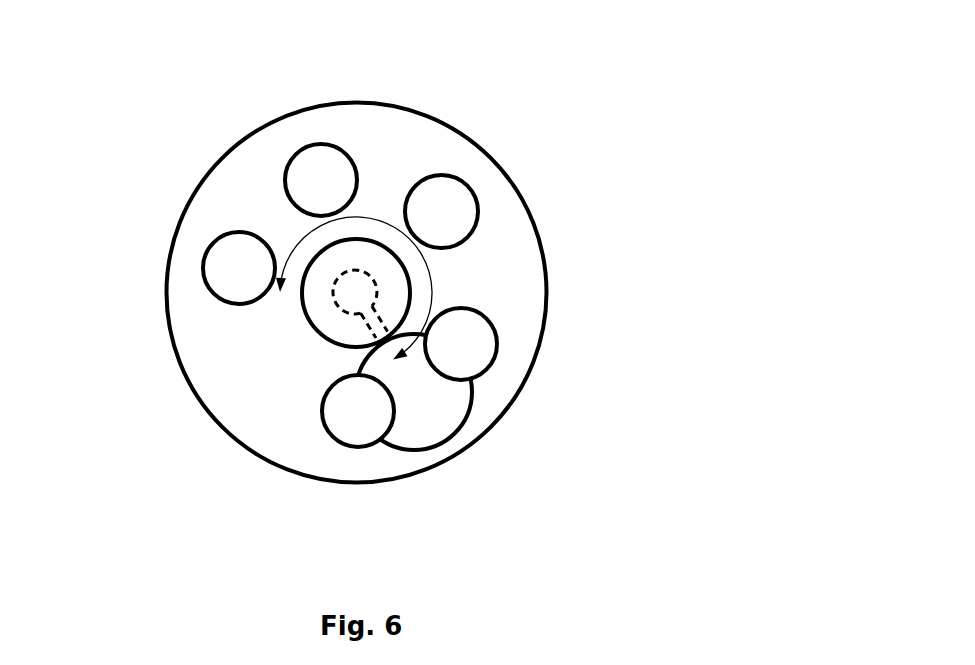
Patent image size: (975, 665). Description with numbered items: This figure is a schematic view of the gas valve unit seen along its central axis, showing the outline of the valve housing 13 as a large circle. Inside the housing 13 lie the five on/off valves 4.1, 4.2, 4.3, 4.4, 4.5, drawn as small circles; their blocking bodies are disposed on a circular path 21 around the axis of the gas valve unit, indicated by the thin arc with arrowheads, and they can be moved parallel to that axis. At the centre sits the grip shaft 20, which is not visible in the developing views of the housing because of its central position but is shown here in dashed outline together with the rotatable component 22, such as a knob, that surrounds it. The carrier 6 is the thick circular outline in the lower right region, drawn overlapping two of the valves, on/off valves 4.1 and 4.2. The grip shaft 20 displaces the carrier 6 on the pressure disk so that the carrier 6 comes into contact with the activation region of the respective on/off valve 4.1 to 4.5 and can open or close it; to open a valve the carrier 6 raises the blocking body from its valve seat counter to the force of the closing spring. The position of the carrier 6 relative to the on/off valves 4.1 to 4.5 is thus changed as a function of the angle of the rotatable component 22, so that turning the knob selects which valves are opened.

The valve housing 13 is at (457, 130).
The carrier 6 is at (465, 420).
The on/off valve 4.1 is at (368, 447).
The on/off valve 4.2 is at (495, 331).
The on/off valve 4.3 is at (478, 202).
The on/off valve 4.4 is at (307, 147).
The on/off valve 4.5 is at (224, 235).
The grip shaft 20 is at (340, 307).
The circular path 21 is at (430, 278).
The rotatable component 22 is at (376, 241).